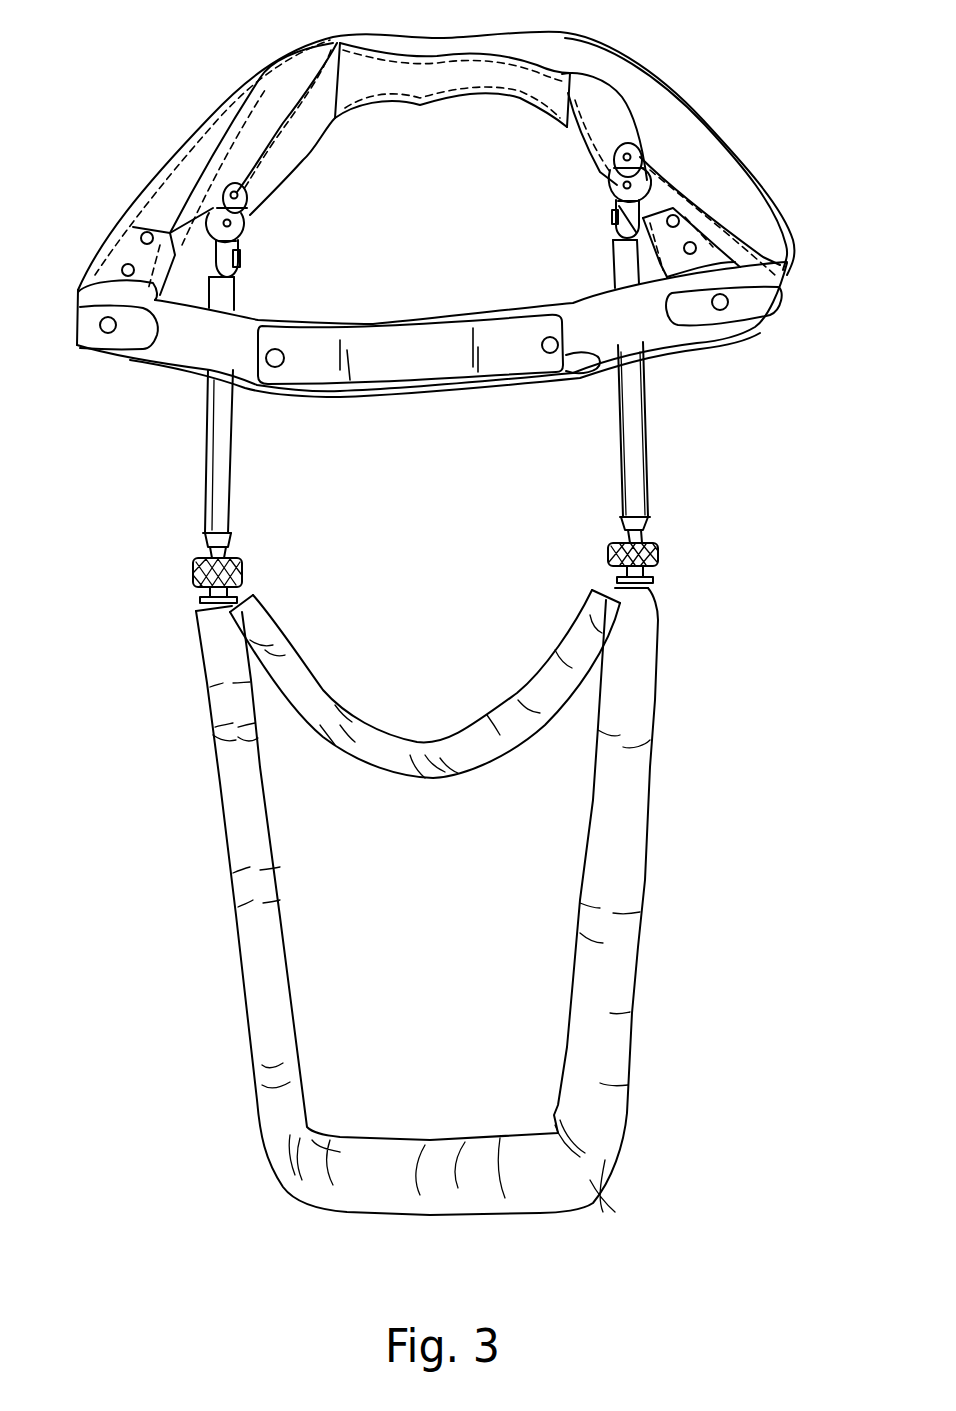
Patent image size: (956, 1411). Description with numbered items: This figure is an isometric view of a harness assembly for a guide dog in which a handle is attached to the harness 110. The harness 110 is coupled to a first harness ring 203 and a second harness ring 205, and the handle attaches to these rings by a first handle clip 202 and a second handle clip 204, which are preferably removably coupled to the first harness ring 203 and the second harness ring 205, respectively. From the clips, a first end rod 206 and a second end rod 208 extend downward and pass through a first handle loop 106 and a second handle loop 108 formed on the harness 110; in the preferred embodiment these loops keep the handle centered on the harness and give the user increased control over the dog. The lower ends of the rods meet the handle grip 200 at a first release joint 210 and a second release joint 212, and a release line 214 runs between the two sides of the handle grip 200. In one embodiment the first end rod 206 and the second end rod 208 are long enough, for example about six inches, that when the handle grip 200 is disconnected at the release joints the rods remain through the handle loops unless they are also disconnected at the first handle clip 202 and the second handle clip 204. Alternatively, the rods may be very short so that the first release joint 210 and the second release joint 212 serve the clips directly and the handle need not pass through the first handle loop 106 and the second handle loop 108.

The first handle loop 106 is at (584, 372).
The second handle loop 108 is at (175, 340).
The harness 110 is at (394, 370).
The handle grip 200 is at (440, 1157).
The first handle clip 202 is at (614, 222).
The first harness ring 203 is at (614, 179).
The second handle clip 204 is at (241, 255).
The second harness ring 205 is at (237, 215).
The first end rod 206 is at (648, 403).
The second end rod 208 is at (233, 470).
The first release joint 210 is at (660, 560).
The second release joint 212 is at (243, 574).
The release line 214 is at (414, 778).